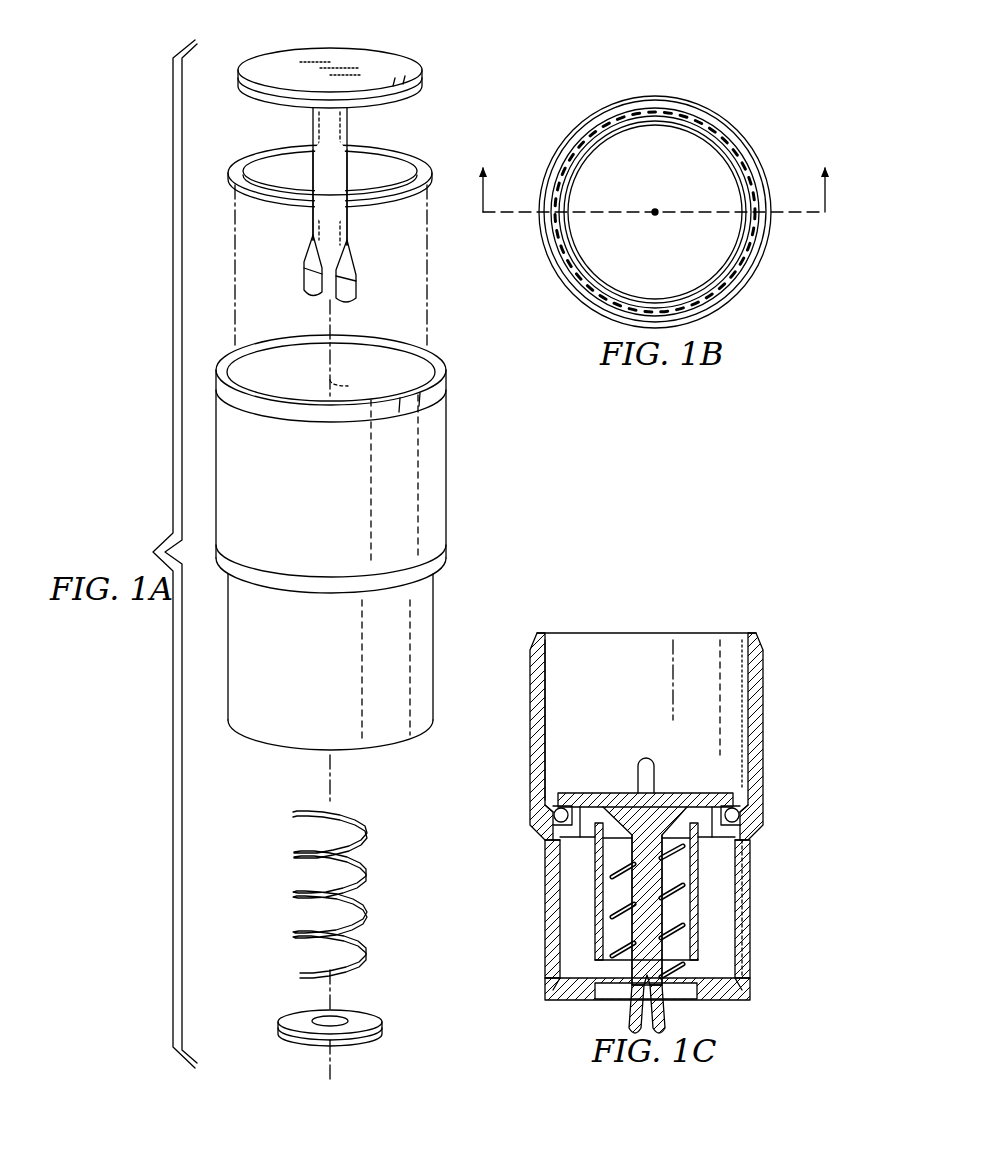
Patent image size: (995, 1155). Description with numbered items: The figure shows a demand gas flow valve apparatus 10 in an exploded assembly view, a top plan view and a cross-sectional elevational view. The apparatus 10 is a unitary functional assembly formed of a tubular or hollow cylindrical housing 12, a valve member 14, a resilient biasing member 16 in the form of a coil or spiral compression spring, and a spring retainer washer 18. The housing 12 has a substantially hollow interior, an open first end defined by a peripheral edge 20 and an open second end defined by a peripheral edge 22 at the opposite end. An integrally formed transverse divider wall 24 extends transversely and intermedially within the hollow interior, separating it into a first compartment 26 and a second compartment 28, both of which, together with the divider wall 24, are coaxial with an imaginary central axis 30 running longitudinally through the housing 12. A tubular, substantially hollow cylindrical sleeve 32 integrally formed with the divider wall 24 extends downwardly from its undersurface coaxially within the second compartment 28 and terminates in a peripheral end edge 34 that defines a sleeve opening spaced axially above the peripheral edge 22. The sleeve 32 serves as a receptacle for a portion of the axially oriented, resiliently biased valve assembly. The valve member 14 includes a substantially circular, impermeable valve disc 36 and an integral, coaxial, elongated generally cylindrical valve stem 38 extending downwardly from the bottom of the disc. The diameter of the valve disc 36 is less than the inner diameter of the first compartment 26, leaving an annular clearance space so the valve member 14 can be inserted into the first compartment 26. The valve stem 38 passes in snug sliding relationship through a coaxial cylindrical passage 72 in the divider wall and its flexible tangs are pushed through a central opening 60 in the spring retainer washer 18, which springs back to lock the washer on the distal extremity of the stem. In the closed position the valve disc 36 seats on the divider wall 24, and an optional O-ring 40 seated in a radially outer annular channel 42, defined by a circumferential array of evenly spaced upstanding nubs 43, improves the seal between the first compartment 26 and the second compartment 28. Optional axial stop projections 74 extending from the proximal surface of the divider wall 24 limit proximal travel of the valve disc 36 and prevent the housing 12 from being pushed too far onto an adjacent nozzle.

In FIG. 1A, the demand gas flow valve apparatus 10 is at (321, 553).
In FIG. 1B, the demand gas flow valve apparatus 10 is at (551, 98).
In FIG. 1C, the demand gas flow valve apparatus 10 is at (575, 612).
In FIG. 1A, the housing 12 is at (449, 502).
In FIG. 1B, the housing 12 is at (551, 262).
In FIG. 1C, the housing 12 is at (752, 885).
In FIG. 1A, the valve member 14 is at (268, 54).
In FIG. 1B, the valve member 14 is at (650, 148).
In FIG. 1C, the valve member 14 is at (668, 795).
In FIG. 1A, the resilient biasing member 16 is at (364, 824).
In FIG. 1C, the resilient biasing member 16 is at (685, 897).
In FIG. 1A, the spring retainer washer 18 is at (375, 1034).
In FIG. 1C, the spring retainer washer 18 is at (697, 992).
In FIG. 1A, the peripheral edge 20 is at (443, 380).
In FIG. 1B, the peripheral edge 20 is at (708, 114).
In FIG. 1C, the peripheral edge 20 is at (752, 634).
In FIG. 1A, the peripheral edge 22 is at (404, 744).
In FIG. 1C, the peripheral edge 22 is at (748, 998).
In FIG. 1B, the transverse divider wall 24 is at (738, 132).
In FIG. 1C, the transverse divider wall 24 is at (595, 843).
In FIG. 1A, the first compartment 26 is at (378, 360).
In FIG. 1B, the first compartment 26 is at (575, 300).
In FIG. 1C, the first compartment 26 is at (562, 696).
In FIG. 1C, the second compartment 28 is at (578, 952).
In FIG. 1B, the central axis 30 is at (657, 216).
In FIG. 1C, the sleeve 32 is at (700, 930).
In FIG. 1C, the peripheral end edge 34 is at (700, 958).
In FIG. 1A, the valve disc 36 is at (392, 62).
In FIG. 1B, the valve disc 36 is at (702, 264).
In FIG. 1A, the valve stem 38 is at (352, 245).
In FIG. 1C, the valve stem 38 is at (630, 887).
In FIG. 1A, the O-ring 40 is at (272, 198).
In FIG. 1C, the O-ring 40 is at (552, 816).
In FIG. 1C, the annular channel 42 is at (548, 838).
In FIG. 1C, the nubs 43 is at (553, 805).
In FIG. 1A, the central opening 60 is at (322, 1020).
In FIG. 1C, the central opening 60 is at (626, 1020).
In FIG. 1C, the cylindrical passage 72 is at (620, 800).
In FIG. 1C, the axial stop projections 74 is at (640, 780).